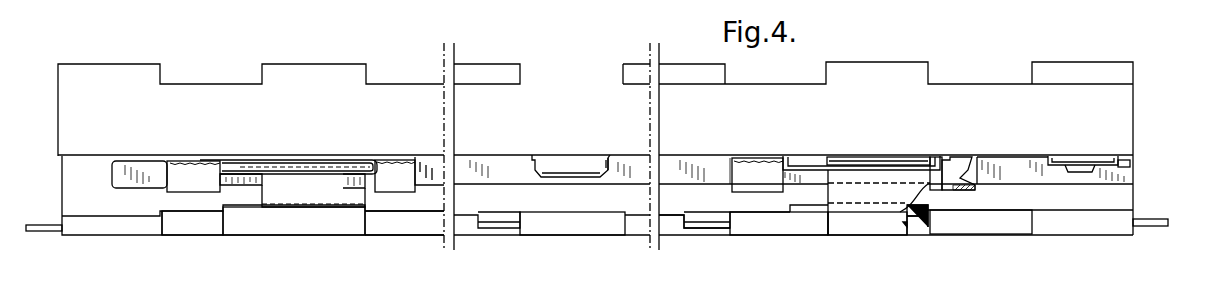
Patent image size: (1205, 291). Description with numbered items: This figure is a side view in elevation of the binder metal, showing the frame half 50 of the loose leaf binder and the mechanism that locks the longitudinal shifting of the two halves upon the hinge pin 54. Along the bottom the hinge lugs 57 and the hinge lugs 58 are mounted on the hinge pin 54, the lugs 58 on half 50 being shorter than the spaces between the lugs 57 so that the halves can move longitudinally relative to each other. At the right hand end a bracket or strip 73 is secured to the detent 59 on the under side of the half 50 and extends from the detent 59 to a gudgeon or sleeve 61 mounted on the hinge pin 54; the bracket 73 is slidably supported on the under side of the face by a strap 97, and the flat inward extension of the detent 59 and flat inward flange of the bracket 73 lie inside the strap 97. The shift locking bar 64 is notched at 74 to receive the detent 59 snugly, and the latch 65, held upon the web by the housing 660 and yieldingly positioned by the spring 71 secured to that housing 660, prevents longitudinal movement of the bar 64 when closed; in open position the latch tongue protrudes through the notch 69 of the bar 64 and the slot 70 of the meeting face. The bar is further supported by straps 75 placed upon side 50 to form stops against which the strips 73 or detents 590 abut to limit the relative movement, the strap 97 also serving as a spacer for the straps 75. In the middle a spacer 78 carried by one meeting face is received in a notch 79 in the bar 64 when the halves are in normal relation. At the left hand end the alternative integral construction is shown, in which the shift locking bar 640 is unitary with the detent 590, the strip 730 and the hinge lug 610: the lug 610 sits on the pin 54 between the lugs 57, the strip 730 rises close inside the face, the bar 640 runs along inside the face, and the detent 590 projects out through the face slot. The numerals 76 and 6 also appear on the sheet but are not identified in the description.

The frame member or half 50 is at (1100, 92).
The hinge pin 54 is at (918, 220).
The hinge lugs 57 is at (180, 228).
The hinge lugs 58 is at (680, 228).
The detent 59 is at (895, 158).
The gudgeon or sleeve 61 is at (878, 218).
The shift locking bar 64 is at (1003, 165).
The latch 65 is at (1105, 157).
The notch 69 is at (1091, 282).
The slot 70 is at (579, 282).
The spring 71 is at (1078, 166).
The bracket or strip 73 is at (838, 193).
The notch 74 is at (826, 156).
The straps 75 is at (180, 180).
The end section 76 is at (1141, 282).
The spacer 78 is at (573, 167).
The notch 79 is at (610, 158).
The strap 97 is at (952, 160).
The detent 590 is at (322, 158).
The hinge lug 610 is at (303, 218).
The shift locking bar 640 is at (258, 178).
The housing 660 is at (1125, 160).
The strip 730 is at (290, 194).
The section 6 is at (317, 282).